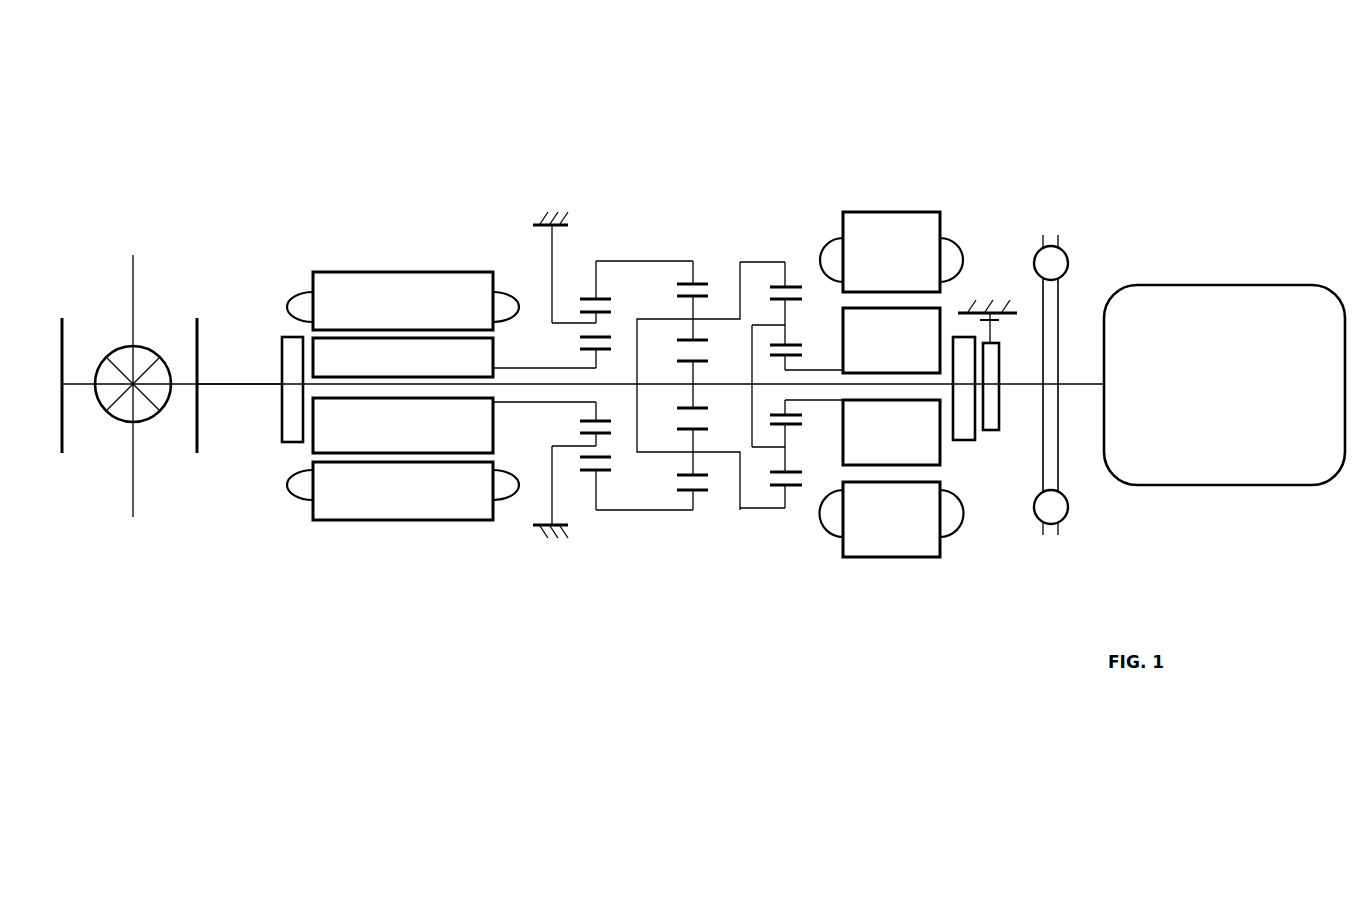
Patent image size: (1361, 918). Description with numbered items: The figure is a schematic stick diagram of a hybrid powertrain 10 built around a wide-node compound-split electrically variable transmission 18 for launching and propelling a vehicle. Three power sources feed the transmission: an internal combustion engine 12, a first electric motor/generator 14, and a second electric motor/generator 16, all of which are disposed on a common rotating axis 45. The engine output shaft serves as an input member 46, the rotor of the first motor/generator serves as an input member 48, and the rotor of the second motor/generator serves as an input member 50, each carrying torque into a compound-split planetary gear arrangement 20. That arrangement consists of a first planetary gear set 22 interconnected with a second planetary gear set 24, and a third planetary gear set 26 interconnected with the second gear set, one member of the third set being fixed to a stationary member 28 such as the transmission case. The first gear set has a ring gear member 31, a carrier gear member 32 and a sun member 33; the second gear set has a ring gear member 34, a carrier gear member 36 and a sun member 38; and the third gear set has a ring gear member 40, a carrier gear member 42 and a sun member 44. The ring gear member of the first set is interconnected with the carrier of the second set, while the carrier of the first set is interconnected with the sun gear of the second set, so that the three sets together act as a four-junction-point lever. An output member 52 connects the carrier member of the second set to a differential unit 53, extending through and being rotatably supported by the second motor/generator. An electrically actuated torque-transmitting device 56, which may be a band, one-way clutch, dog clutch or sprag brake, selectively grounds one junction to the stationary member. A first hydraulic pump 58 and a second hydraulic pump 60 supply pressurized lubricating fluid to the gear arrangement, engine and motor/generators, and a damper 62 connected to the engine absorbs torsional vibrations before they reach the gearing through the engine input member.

The hybrid powertrain 10 is at (948, 120).
The internal combustion engine 12 is at (1205, 290).
The first electric motor/generator 14 is at (850, 456).
The second electric motor/generator 16 is at (318, 438).
The electrically variable transmission 18 is at (722, 182).
The compound-split planetary gear arrangement 20 is at (688, 167).
The first planetary gear set 22 is at (780, 223).
The second planetary gear set 24 is at (683, 243).
The third planetary gear set 26 is at (542, 243).
The stationary member 28 is at (567, 530).
The ring gear member 31 is at (787, 287).
The carrier gear member 32 is at (787, 315).
The sun member 33 is at (802, 356).
The ring gear member 34 is at (696, 284).
The carrier gear member 36 is at (667, 318).
The sun member 38 is at (690, 380).
The ring gear member 40 is at (590, 300).
The carrier gear member 42 is at (597, 330).
The sun member 44 is at (580, 350).
The common rotating axis 45 is at (70, 386).
The input member 46 is at (1060, 382).
The input member 48 is at (832, 400).
The input member 50 is at (548, 405).
The output member 52 is at (248, 384).
The differential unit 53 is at (120, 348).
The torque-transmitting device 56 is at (990, 433).
The first hydraulic pump 58 is at (960, 442).
The second hydraulic pump 60 is at (287, 337).
The damper 62 is at (1062, 256).